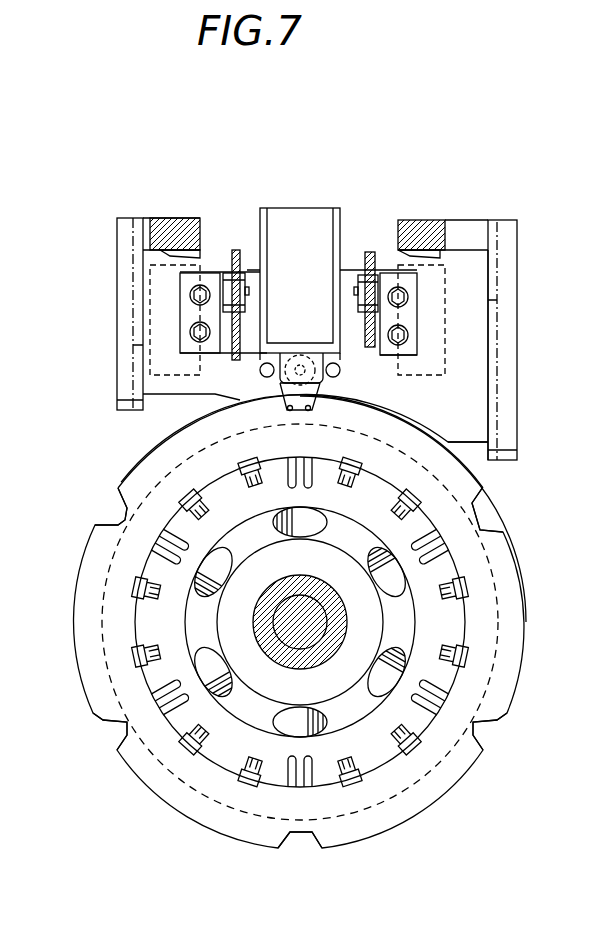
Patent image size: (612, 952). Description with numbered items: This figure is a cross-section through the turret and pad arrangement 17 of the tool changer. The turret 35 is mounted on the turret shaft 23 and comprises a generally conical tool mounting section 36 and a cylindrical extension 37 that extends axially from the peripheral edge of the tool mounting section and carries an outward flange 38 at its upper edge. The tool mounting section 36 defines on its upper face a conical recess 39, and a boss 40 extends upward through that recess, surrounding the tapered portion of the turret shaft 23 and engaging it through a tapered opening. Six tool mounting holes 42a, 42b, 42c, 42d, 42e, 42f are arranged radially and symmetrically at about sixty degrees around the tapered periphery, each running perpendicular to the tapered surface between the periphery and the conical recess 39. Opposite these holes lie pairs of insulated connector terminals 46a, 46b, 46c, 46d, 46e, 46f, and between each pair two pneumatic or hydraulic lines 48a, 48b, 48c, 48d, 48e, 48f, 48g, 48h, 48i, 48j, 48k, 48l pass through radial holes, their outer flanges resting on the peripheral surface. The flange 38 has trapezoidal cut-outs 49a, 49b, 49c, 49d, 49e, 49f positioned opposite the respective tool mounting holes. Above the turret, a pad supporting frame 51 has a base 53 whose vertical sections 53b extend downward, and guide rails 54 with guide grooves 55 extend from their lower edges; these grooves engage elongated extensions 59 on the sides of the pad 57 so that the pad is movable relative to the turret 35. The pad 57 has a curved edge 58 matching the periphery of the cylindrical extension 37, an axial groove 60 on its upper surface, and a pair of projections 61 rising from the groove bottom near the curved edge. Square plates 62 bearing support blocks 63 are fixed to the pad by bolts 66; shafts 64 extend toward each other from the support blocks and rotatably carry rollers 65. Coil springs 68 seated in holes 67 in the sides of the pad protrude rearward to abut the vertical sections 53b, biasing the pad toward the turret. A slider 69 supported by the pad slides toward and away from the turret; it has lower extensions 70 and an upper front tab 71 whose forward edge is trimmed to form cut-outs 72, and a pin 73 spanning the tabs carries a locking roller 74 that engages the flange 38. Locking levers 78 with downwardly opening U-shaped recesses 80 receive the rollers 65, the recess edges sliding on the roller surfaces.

The mounting assembly 17 is at (532, 202).
The turret shaft 23 is at (283, 626).
The turret 35 is at (524, 618).
The conical tool mounting section 36 is at (447, 633).
The cylindrical extension 37 is at (410, 826).
The flange 38 is at (507, 672).
The conical recess 39 is at (413, 622).
The boss 40 is at (277, 660).
The tool mounting hole 42a is at (295, 535).
The tool mounting hole 42b is at (370, 576).
The tool mounting hole 42c is at (402, 680).
The tool mounting hole 42d is at (310, 715).
The tool mounting hole 42e is at (200, 670).
The tool mounting hole 42f is at (205, 586).
The connector terminals 46a is at (296, 780).
The connector terminals 46b is at (165, 706).
The connector terminals 46c is at (160, 552).
The connector terminals 46d is at (308, 472).
The connector terminals 46e is at (440, 553).
The connector terminals 46f is at (438, 706).
The pneumatic or hydraulic line 48a is at (350, 782).
The pneumatic or hydraulic line 48b is at (248, 762).
The pneumatic or hydraulic line 48c is at (192, 748).
The pneumatic or hydraulic line 48d is at (138, 654).
The pneumatic or hydraulic line 48e is at (138, 590).
The pneumatic or hydraulic line 48f is at (198, 517).
The pneumatic or hydraulic line 48g is at (248, 486).
The pneumatic or hydraulic line 48h is at (352, 486).
The pneumatic or hydraulic line 48i is at (413, 512).
The pneumatic or hydraulic line 48j is at (462, 592).
The pneumatic or hydraulic line 48k is at (462, 660).
The pneumatic or hydraulic line 48l is at (395, 738).
The cut-out 49a is at (322, 850).
The cut-out 49b is at (93, 715).
The cut-out 49c is at (105, 525).
The cut-out 49d is at (290, 410).
The cut-out 49e is at (483, 496).
The cut-out 49f is at (490, 745).
The pad supporting frame 51 is at (518, 248).
The base 53 is at (440, 235).
The vertical sections 53b is at (180, 230).
The guide rails 54 is at (134, 270).
The guide grooves 55 is at (131, 304).
The pad 57 is at (498, 250).
The curved edge 58 is at (240, 395).
The elongated extensions 59 is at (137, 352).
The axial groove 60 is at (341, 372).
The projections 61 is at (336, 364).
The square plates 62 is at (250, 280).
The support blocks 63 is at (183, 346).
The shafts 64 is at (246, 290).
The rollers 65 is at (222, 275).
The bolts 66 is at (190, 335).
The holes 67 is at (157, 283).
The coil springs 68 is at (176, 246).
The slider 69 is at (312, 215).
The extensions 70 is at (262, 210).
The upper front tab 71 is at (318, 398).
The cut-outs 72 is at (283, 353).
The pin 73 is at (301, 360).
The locking roller 74 is at (285, 401).
The locking levers 78 is at (234, 255).
The U-shaped recesses 80 is at (240, 272).